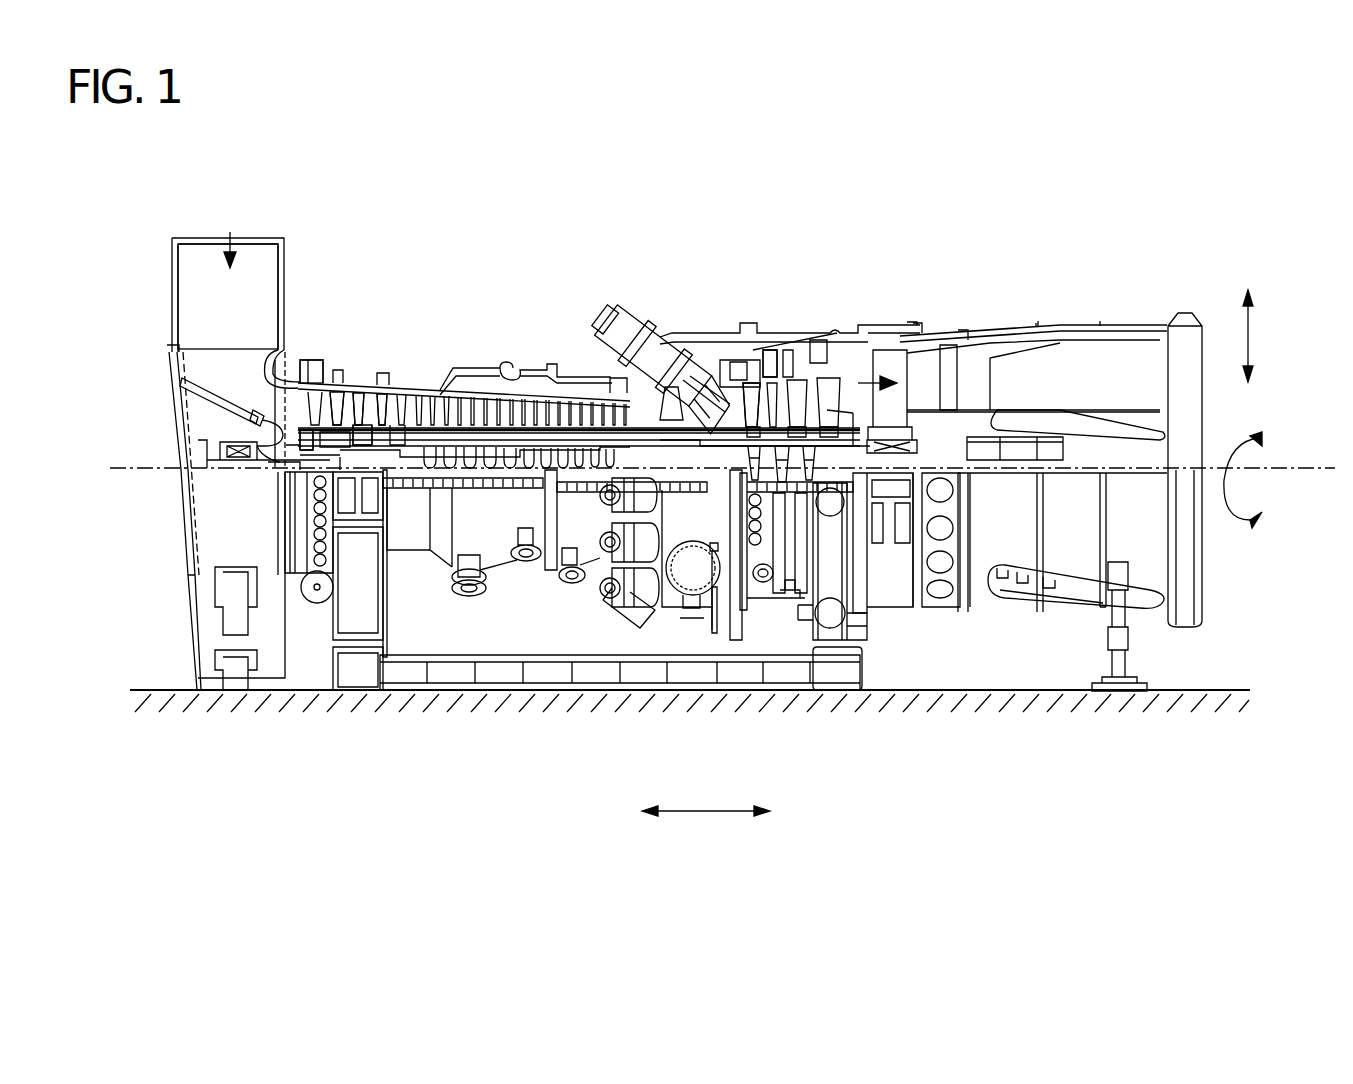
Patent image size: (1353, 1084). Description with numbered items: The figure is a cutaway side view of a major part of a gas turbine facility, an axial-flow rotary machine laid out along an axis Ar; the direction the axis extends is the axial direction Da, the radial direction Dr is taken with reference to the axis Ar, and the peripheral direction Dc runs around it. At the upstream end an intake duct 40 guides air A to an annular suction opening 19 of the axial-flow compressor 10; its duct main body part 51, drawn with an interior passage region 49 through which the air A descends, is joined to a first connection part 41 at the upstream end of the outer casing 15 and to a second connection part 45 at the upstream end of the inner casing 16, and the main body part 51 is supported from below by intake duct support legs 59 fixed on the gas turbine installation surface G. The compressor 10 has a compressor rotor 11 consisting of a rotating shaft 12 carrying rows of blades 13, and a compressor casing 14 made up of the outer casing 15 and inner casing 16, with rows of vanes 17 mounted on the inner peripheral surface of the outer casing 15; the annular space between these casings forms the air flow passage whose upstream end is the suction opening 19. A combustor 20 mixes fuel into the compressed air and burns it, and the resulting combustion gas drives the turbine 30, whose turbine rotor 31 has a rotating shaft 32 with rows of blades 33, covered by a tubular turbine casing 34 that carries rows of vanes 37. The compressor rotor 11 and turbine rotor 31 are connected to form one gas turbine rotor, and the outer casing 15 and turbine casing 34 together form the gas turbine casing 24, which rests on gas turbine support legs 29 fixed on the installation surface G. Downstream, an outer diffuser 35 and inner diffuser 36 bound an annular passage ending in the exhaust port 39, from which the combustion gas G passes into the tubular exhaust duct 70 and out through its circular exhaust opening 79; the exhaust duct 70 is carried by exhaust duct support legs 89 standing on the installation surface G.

The axial-flow compressor 10 is at (508, 352).
The compressor rotor 11 is at (542, 768).
The rotating shaft 12 is at (360, 452).
The blades 13 is at (343, 455).
The compressor casing 14 is at (424, 274).
The outer casing 15 is at (325, 428).
The inner casing 16 is at (354, 427).
The vanes 17 is at (388, 425).
The suction opening 19 is at (270, 400).
The combustor 20 is at (622, 314).
The gas turbine casing 24 is at (548, 376).
The gas turbine support legs 29 is at (330, 628).
The turbine 30 is at (848, 322).
The turbine rotor 31 is at (1122, 768).
The rotating shaft 32 is at (820, 445).
The blades 33 is at (783, 445).
The turbine casing 34 is at (792, 350).
The outer diffuser 35 is at (890, 350).
The inner diffuser 36 is at (945, 400).
The vanes 37 is at (790, 378).
The exhaust port 39 is at (958, 378).
The intake duct 40 is at (154, 248).
The first connection part 41 is at (284, 344).
The second connection part 45 is at (222, 422).
The intake passage 49 is at (205, 238).
The duct main body part 51 is at (170, 296).
The intake duct support legs 59 is at (222, 683).
The exhaust duct 70 is at (1078, 322).
The exhaust opening 79 is at (1203, 365).
The exhaust duct support legs 89 is at (1127, 658).
The air A is at (230, 236).
The combustion gas / gas turbine installation surface G is at (1227, 690).
The axial direction Da is at (702, 812).
The radial direction Dr is at (1253, 338).
The peripheral direction Dc is at (1250, 420).
The axis Ar is at (1300, 470).